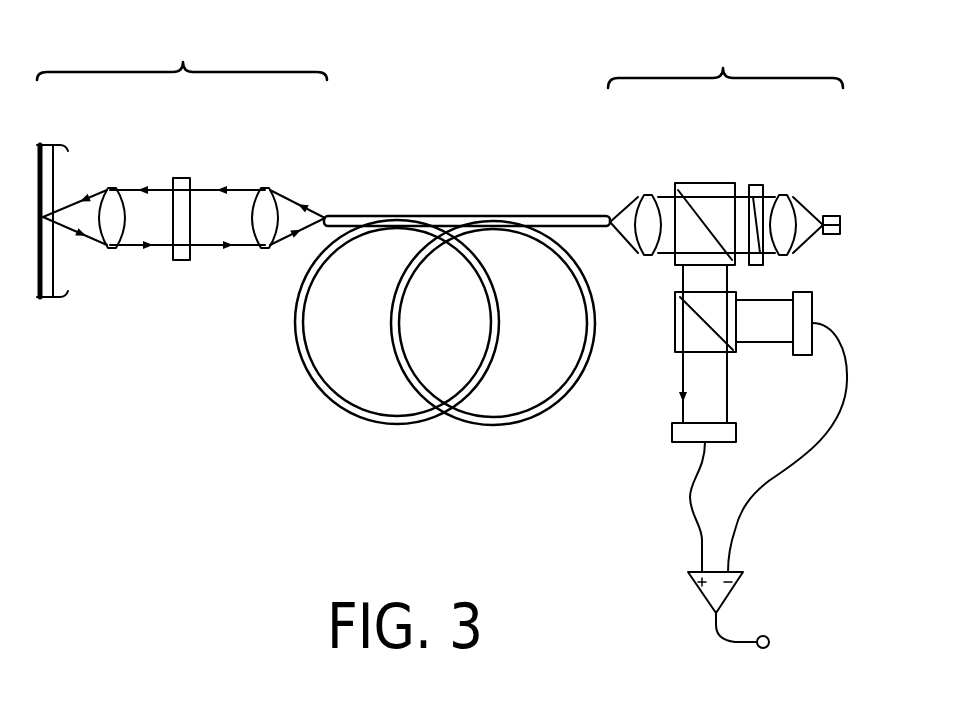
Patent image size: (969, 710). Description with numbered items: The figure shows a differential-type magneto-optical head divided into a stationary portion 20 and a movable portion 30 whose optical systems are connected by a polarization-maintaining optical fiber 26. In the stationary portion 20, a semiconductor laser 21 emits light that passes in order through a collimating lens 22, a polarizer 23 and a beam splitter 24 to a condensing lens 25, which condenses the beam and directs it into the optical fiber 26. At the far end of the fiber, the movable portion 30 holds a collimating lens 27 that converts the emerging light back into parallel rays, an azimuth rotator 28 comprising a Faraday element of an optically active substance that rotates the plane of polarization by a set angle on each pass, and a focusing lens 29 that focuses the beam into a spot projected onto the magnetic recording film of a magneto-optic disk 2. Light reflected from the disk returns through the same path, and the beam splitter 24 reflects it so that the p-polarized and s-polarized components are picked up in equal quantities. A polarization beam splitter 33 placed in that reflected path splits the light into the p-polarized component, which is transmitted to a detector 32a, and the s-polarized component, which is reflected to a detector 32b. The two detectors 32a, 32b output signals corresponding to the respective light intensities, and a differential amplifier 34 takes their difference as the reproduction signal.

The magneto-optic disk 2 is at (55, 313).
The stationary portion 20 is at (738, 49).
The semiconductor laser 21 is at (833, 216).
The collimating lens 22 is at (792, 195).
The polarizer 23 is at (753, 185).
The beam splitter 24 is at (690, 183).
The condensing lens 25 is at (643, 195).
The polarization-maintaining optical fiber 26 is at (480, 423).
The collimating lens 27 is at (265, 188).
The azimuth rotator 28 is at (182, 178).
The focusing lens 29 is at (106, 188).
The movable portion 30 is at (223, 54).
The detector 32a is at (677, 442).
The detector 32b is at (812, 303).
The polarization beam splitter 33 is at (675, 325).
The differential amplifier 34 is at (700, 598).